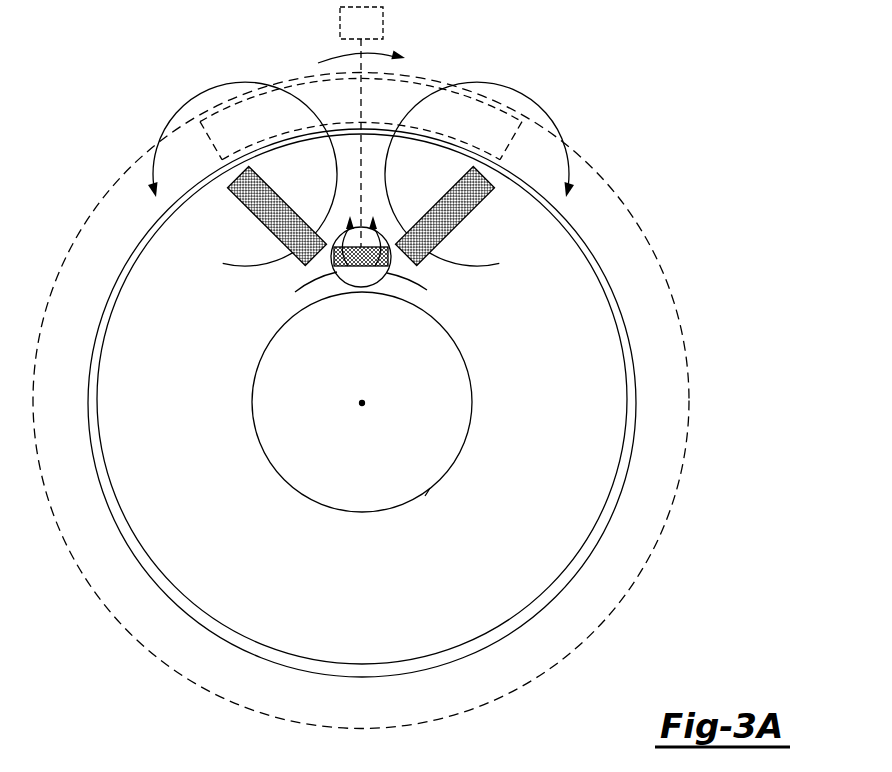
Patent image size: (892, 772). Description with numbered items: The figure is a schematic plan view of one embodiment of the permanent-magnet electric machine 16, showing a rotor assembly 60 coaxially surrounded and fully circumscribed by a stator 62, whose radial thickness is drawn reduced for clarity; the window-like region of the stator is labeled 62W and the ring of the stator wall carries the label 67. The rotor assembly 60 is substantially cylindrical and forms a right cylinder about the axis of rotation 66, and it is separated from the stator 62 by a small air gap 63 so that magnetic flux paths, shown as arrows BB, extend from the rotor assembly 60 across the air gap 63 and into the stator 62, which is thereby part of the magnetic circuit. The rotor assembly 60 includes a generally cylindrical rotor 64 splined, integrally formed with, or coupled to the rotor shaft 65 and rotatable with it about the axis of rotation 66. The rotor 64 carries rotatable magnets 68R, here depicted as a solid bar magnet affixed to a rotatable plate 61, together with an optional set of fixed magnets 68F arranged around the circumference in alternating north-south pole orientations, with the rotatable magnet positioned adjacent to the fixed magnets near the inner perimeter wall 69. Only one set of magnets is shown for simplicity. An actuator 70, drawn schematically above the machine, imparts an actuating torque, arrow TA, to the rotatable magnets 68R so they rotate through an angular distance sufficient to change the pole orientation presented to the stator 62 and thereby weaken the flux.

The electric machine 16 is at (377, 403).
The rotor assembly 60 is at (523, 634).
The rotatable plate 61 is at (357, 228).
The stator 62 is at (644, 201).
The housing window 62W is at (308, 90).
The air gap 63 is at (595, 537).
The rotor 64 is at (543, 334).
The rotor shaft 65 is at (368, 358).
The axis of rotation 66 is at (362, 404).
The inner surface of housing wall 67 is at (547, 595).
The fixed magnets 68F is at (247, 211).
The rotatable magnets 68R is at (307, 277).
The inner perimeter wall 69 is at (430, 488).
The actuator 70 is at (361, 127).
The magnetic flux paths BB is at (221, 84).
The actuating torque TA is at (375, 61).